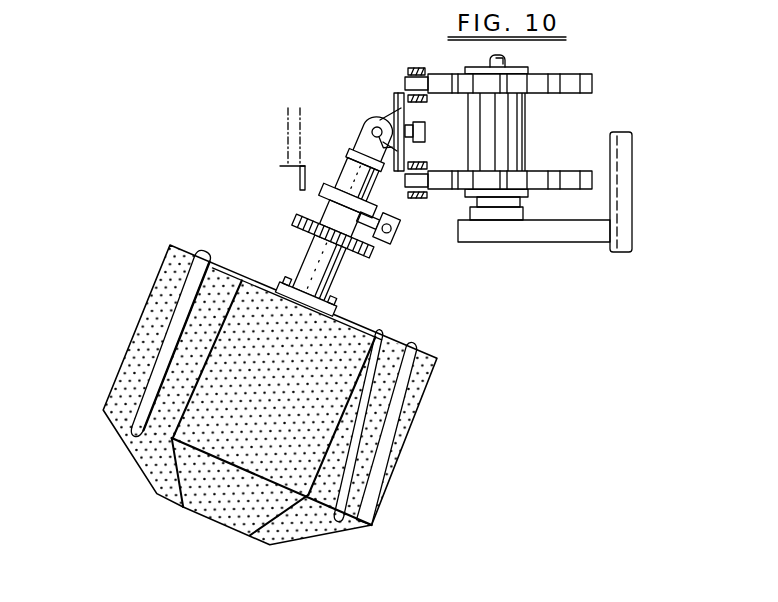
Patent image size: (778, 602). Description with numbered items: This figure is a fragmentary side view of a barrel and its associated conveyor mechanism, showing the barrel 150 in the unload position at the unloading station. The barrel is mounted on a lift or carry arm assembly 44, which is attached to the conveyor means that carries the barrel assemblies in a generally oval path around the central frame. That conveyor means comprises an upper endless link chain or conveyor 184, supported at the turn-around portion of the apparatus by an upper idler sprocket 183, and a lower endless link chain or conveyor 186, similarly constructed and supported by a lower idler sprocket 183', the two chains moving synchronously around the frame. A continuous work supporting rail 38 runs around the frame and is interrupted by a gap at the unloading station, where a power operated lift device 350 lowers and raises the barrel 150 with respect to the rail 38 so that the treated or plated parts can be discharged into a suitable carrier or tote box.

The barrel 150 is at (145, 338).
The lift or carry arm assembly 44 is at (300, 242).
The power operated lift device 350 is at (388, 250).
The work supporting angle or rail 38 is at (281, 168).
The upper idler sprocket 183 is at (556, 93).
The lower idler sprocket 183' is at (520, 159).
The upper link chain or conveyor 184 is at (405, 82).
The lower link chain or conveyor 186 is at (404, 198).